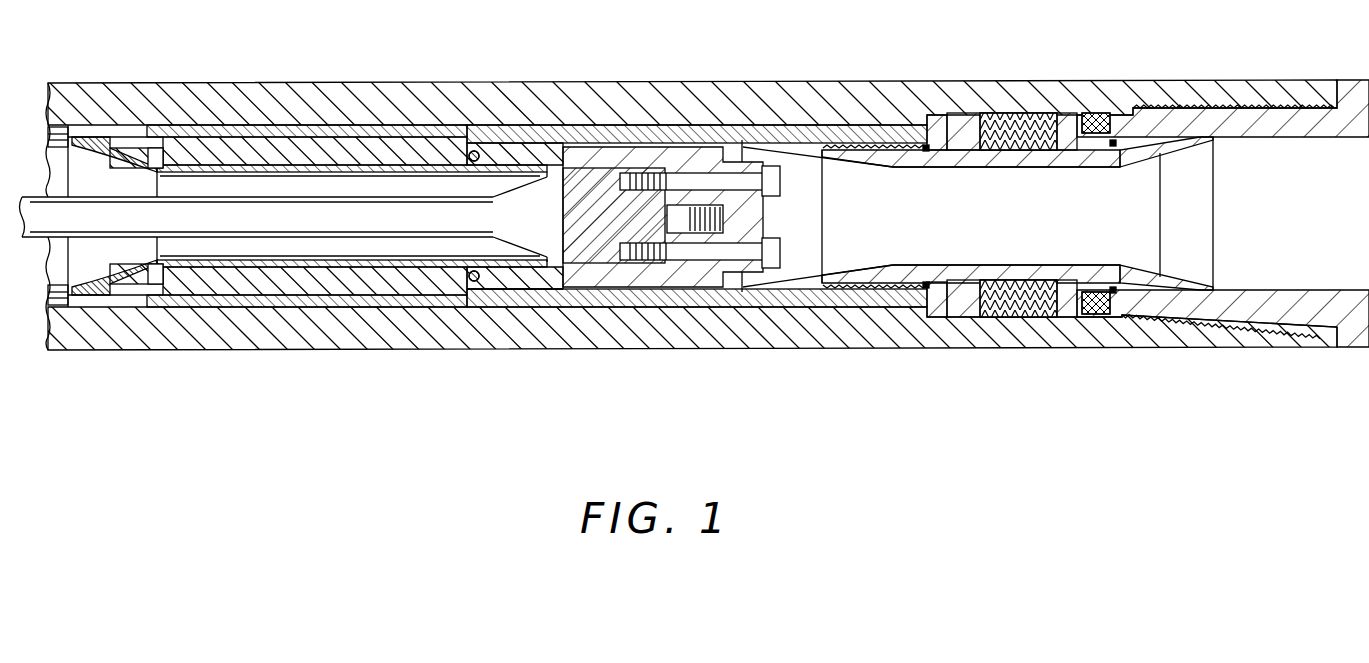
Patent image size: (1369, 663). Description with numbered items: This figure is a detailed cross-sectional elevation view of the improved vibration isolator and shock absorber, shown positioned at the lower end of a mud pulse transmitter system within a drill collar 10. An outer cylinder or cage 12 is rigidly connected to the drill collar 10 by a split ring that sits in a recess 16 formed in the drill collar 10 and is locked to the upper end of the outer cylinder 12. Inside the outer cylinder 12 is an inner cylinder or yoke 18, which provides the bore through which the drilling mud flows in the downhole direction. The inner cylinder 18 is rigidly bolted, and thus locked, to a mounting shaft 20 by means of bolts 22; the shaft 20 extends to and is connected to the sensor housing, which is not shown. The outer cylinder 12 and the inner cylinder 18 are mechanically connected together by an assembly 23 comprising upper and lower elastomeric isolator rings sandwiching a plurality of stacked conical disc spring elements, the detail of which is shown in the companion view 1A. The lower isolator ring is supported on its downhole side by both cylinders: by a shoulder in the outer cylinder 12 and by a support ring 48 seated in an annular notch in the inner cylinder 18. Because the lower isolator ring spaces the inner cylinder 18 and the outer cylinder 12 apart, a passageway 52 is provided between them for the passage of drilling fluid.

The drill collar 10 is at (685, 82).
The outer cylinder 12 is at (597, 125).
The recess 16 is at (915, 125).
The coupling with seal stack 1A is at (945, 135).
The inner cylinder 18 is at (523, 287).
The mounting shaft 20 is at (237, 197).
The bolts 22 is at (745, 180).
The assembly 23 is at (331, 130).
The support ring 48 is at (484, 148).
The passageway 52 is at (560, 143).